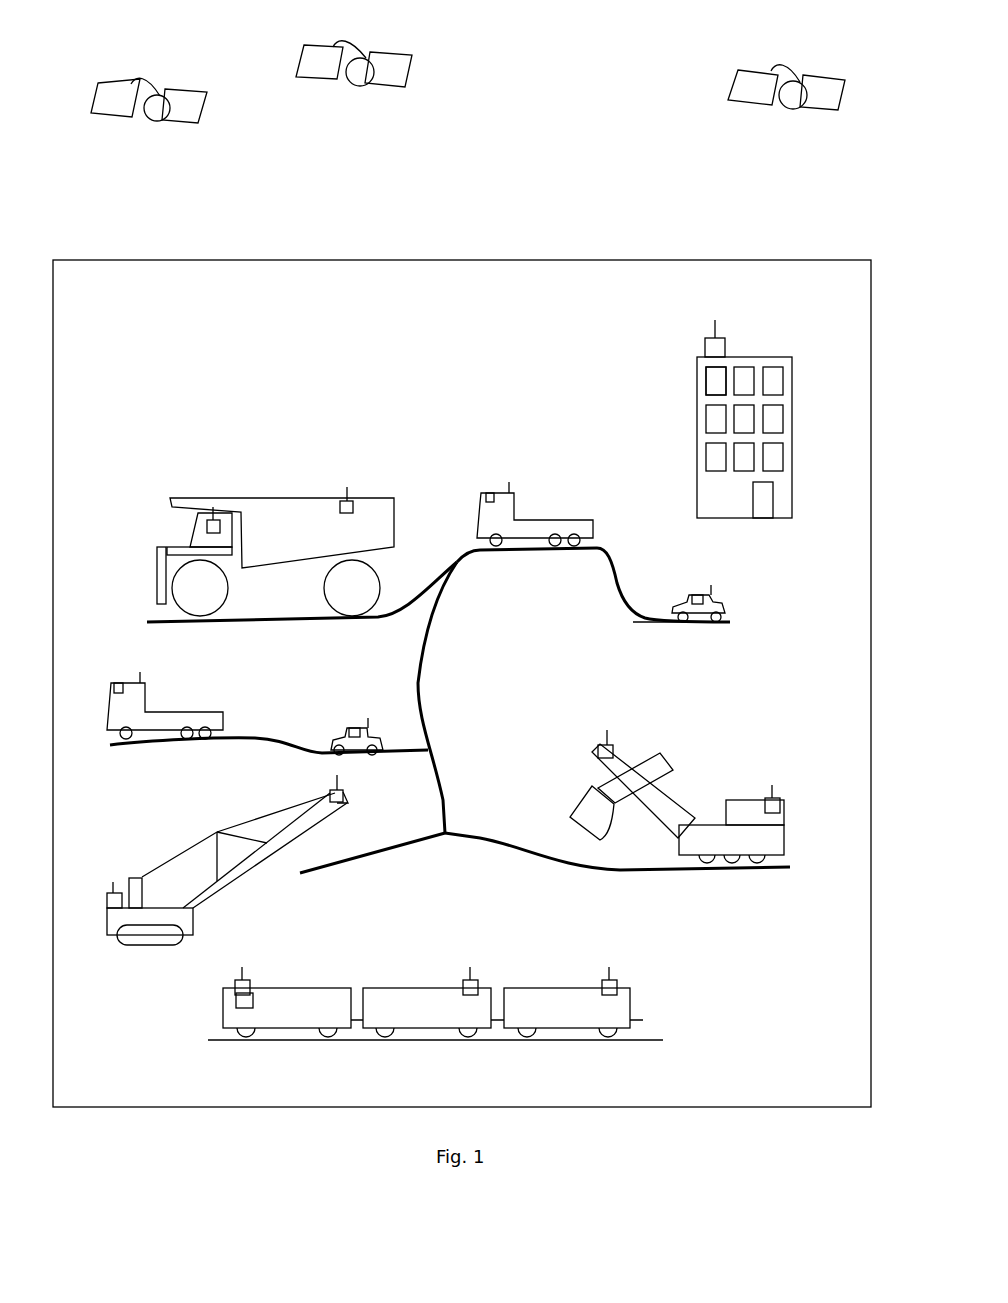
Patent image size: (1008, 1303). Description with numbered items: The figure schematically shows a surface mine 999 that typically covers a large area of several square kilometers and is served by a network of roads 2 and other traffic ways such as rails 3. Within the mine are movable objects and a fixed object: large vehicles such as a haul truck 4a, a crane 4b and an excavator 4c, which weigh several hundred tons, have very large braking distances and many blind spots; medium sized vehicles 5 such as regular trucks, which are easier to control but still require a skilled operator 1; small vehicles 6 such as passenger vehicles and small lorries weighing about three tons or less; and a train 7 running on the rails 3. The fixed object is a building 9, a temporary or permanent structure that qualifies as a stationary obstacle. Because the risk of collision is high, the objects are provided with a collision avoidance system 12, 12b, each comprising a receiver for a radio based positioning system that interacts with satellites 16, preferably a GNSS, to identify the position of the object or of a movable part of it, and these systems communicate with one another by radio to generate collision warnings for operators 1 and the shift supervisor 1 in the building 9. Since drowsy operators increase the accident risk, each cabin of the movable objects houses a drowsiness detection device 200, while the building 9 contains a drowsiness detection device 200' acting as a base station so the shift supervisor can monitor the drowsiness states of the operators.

The satellite 16 is at (157, 110).
The surface mine 999 is at (453, 260).
The operator 1 is at (458, 679).
The collision avoidance system 12 is at (458, 679).
The collision avoidance system 12b is at (458, 679).
The drowsiness detection device 200 is at (458, 679).
The drowsiness detection device 200' is at (659, 357).
The building 9 is at (697, 413).
The haul truck 4a is at (213, 527).
The crane 4b is at (115, 897).
The excavator 4c is at (607, 745).
The medium sized vehicle 5 is at (490, 497).
The small vehicle 6 is at (337, 705).
The train 7 is at (248, 983).
The rails 3 is at (652, 1040).
The roads 2 is at (335, 870).